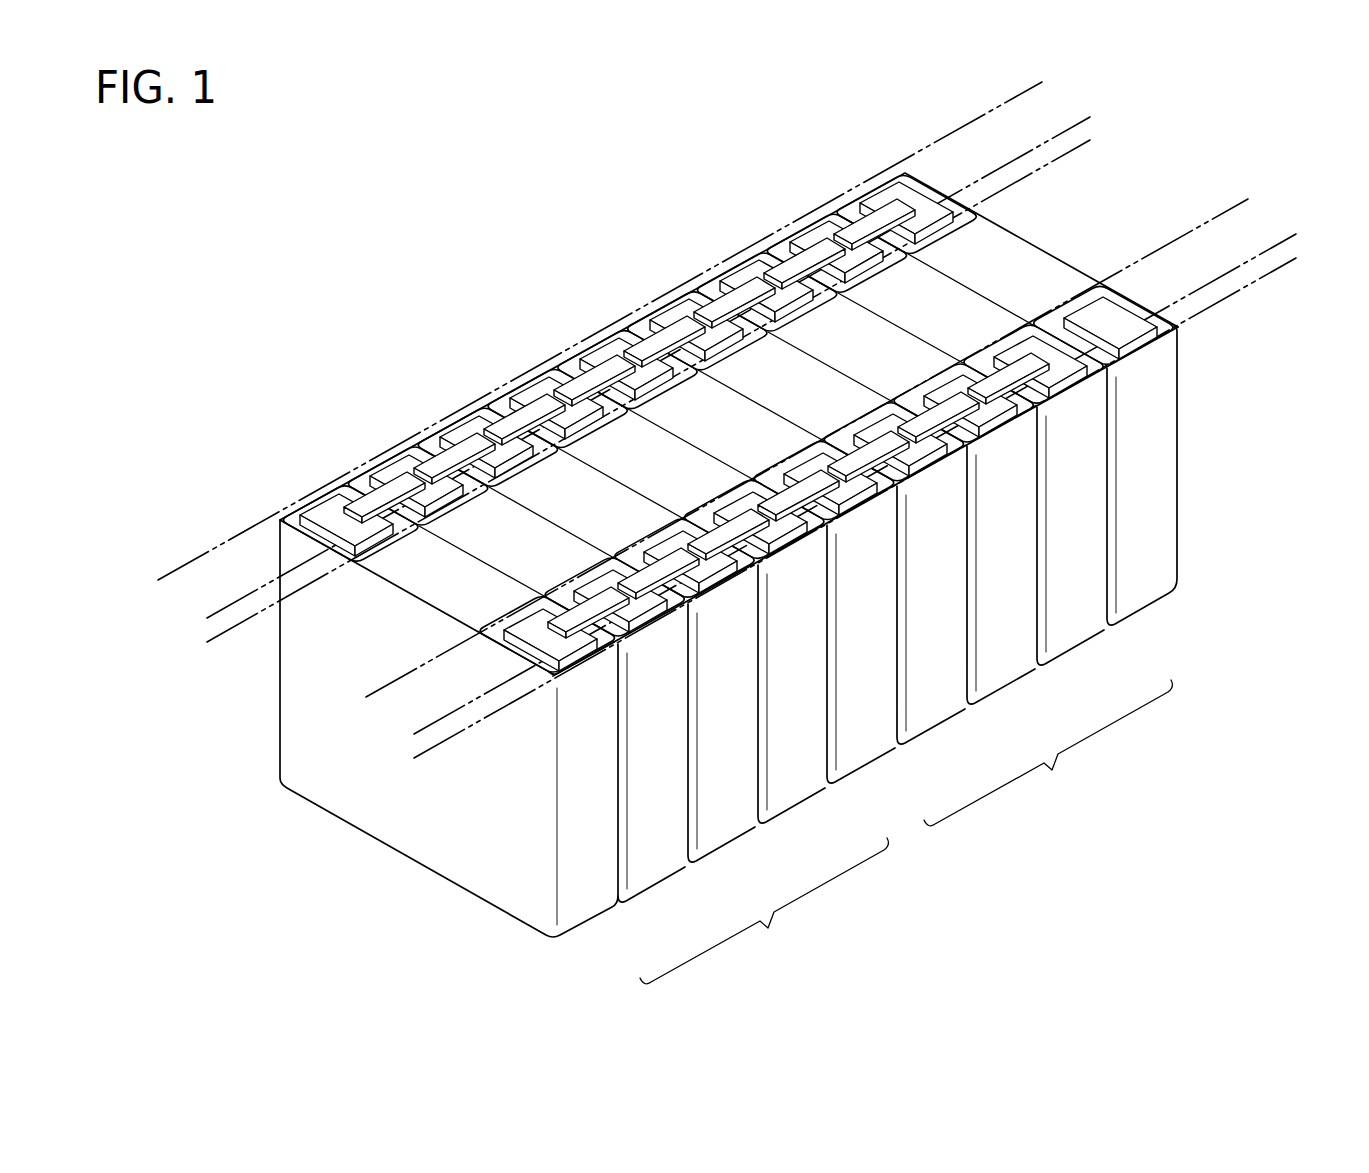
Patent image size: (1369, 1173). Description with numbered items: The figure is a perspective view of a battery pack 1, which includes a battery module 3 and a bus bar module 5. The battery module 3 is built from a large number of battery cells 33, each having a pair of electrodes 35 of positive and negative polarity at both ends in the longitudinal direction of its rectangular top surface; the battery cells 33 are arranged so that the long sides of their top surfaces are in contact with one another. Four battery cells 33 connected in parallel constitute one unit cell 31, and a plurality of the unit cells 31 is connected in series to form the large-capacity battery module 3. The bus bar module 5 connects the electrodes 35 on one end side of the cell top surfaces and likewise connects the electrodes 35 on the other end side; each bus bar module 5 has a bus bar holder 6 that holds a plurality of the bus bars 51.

The battery pack 1 is at (576, 235).
The battery module 3 is at (1224, 506).
The bus bar module 5 is at (960, 125).
The bus bar holder 6 is at (1025, 128).
The unit cell 31 is at (906, 832).
The battery cell 33 is at (592, 913).
The electrode 35 is at (1080, 286).
The bus bar 51 is at (865, 215).